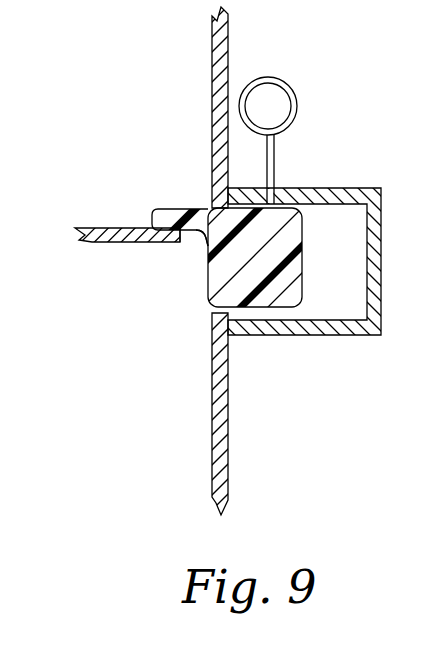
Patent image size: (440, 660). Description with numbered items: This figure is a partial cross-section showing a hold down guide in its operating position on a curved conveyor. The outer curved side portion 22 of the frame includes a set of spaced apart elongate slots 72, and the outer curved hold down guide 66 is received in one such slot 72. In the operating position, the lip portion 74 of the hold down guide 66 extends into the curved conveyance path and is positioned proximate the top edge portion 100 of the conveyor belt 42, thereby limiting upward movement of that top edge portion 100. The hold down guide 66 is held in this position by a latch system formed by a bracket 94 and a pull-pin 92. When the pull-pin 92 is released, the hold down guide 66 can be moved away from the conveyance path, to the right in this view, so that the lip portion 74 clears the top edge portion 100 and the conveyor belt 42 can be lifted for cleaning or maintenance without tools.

The outer curved side portion 22 is at (228, 42).
The conveyor belt 42 is at (112, 228).
The outer curved hold down guide 66 is at (258, 263).
The elongate slot 72 is at (210, 213).
The lip portion 74 is at (141, 222).
The pull-pin 92 is at (297, 110).
The bracket 94 is at (332, 188).
The top edge portion 100 is at (167, 243).